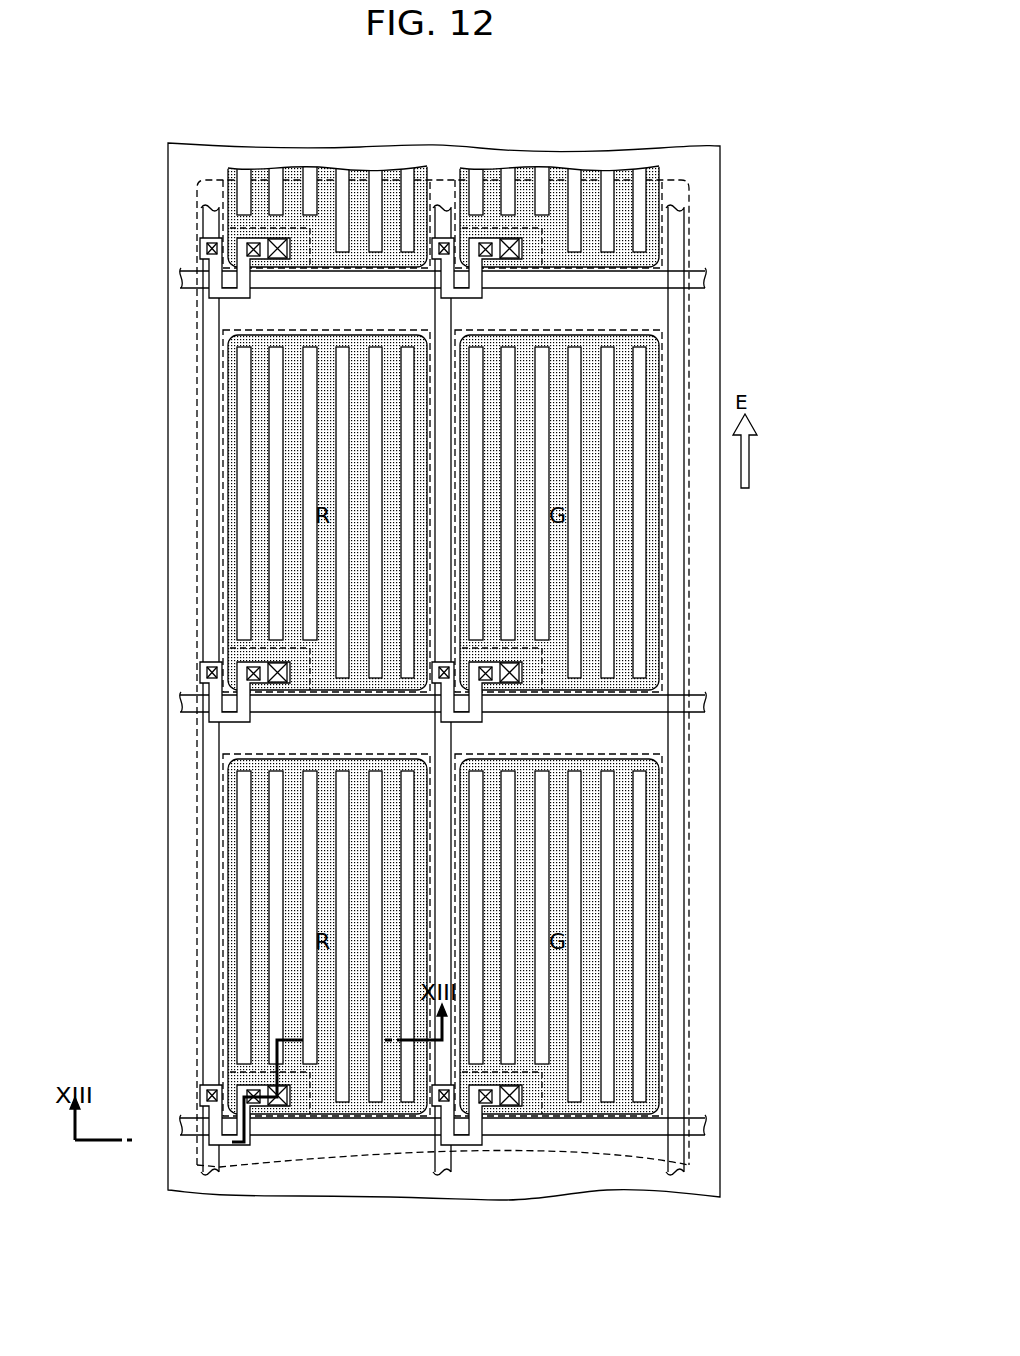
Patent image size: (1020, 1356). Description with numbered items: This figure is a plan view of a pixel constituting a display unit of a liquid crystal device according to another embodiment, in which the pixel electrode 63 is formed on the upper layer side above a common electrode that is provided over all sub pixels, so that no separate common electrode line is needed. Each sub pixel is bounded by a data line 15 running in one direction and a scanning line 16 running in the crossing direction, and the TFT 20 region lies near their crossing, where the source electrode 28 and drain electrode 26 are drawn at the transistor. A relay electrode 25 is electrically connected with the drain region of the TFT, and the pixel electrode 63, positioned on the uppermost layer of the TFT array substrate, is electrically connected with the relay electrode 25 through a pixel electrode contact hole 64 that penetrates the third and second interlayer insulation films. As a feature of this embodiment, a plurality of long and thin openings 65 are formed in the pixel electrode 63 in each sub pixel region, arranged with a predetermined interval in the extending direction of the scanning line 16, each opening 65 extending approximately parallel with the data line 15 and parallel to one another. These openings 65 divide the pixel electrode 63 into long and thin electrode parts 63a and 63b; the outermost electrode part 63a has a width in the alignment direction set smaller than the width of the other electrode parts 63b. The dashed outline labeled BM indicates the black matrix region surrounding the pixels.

The data line 15 is at (215, 205).
The scanning line 16 is at (705, 695).
The thin film transistor 20 is at (230, 718).
The relay electrode 25 is at (262, 645).
The drain electrode 26 is at (252, 1092).
The source electrode 28 is at (200, 1085).
The pixel electrode 63 is at (253, 499).
The electrode part 63a is at (232, 362).
The electrode part 63b is at (293, 452).
The pixel electrode contact hole 64 is at (276, 1088).
The opening 65 is at (277, 403).
The black matrix BM is at (542, 1150).